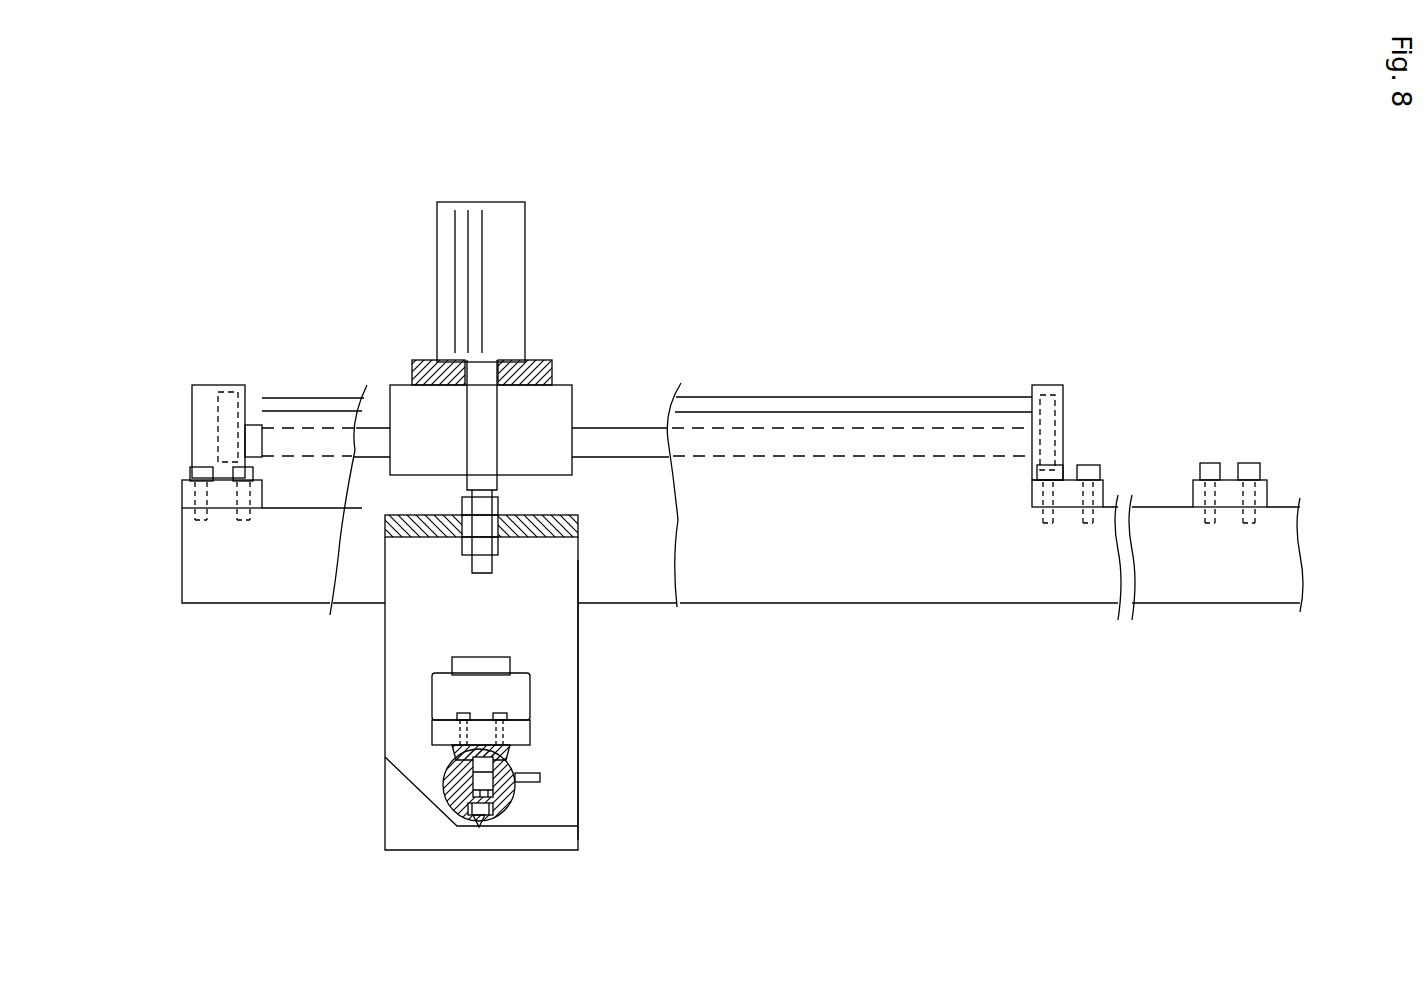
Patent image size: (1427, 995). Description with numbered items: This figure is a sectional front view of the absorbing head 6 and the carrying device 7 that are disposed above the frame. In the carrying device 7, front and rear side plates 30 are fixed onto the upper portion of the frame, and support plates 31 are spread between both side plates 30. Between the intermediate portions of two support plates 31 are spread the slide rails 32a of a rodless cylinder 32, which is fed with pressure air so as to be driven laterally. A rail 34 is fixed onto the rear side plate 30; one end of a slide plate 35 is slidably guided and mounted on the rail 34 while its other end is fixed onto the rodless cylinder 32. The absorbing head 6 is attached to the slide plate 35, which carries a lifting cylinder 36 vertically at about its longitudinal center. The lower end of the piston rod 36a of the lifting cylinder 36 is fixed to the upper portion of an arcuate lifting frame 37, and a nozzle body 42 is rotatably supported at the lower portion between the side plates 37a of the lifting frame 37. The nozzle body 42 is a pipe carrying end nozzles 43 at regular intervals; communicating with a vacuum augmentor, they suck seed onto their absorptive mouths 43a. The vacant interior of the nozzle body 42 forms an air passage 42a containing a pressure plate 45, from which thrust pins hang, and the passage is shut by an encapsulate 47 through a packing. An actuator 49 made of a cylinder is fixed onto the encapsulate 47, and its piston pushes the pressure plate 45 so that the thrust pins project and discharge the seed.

The absorbing head 6 is at (795, 778).
The carrying device 7 is at (730, 257).
The side plate 30 is at (855, 587).
The support plate 31 is at (226, 497).
The rodless cylinder 32 is at (576, 392).
The slide rail 32a is at (637, 430).
The rail 34 is at (932, 405).
The slide plate 35 is at (545, 357).
The lifting cylinder 36 is at (527, 228).
The piston rod 36a is at (475, 415).
The lifting frame 37 is at (573, 518).
The side plate 37a is at (573, 720).
The nozzle body 42 is at (443, 777).
The air passage 42a is at (513, 795).
The end nozzle 43 is at (458, 818).
The absorptive mouth 43a is at (480, 823).
The pressure plate 45 is at (512, 767).
The encapsulate 47 is at (453, 753).
The actuator 49 is at (522, 682).